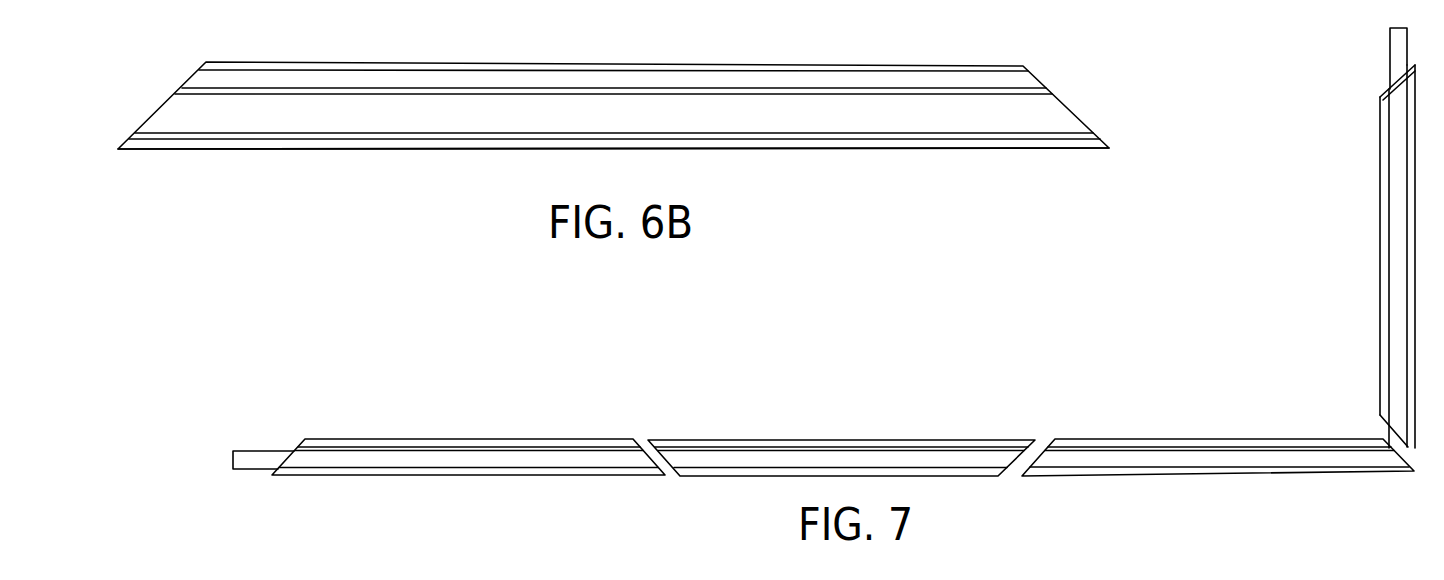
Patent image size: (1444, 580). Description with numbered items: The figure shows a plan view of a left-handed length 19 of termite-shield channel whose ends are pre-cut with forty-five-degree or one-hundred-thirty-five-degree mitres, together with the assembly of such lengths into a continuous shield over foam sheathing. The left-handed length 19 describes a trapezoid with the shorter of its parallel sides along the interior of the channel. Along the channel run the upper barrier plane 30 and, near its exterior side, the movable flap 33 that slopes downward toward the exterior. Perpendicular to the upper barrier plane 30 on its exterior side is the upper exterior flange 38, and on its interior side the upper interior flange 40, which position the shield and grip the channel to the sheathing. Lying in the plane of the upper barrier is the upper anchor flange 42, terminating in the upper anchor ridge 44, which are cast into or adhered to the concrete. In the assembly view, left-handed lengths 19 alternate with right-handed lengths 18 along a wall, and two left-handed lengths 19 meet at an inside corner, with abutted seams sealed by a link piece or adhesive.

In FIG. 6B, the left-handed length 19 is at (347, 171).
In FIG. 7, the right-handed length 18 is at (822, 438).
In FIG. 6B, the upper barrier plane 30 is at (1048, 120).
In FIG. 6B, the movable flap 33 is at (922, 147).
In FIG. 6B, the upper exterior flange 38 is at (1002, 137).
In FIG. 6B, the upper interior flange 40 is at (1017, 94).
In FIG. 6B, the upper anchor flange 42 is at (933, 82).
In FIG. 6B, the upper anchor ridge 44 is at (829, 66).